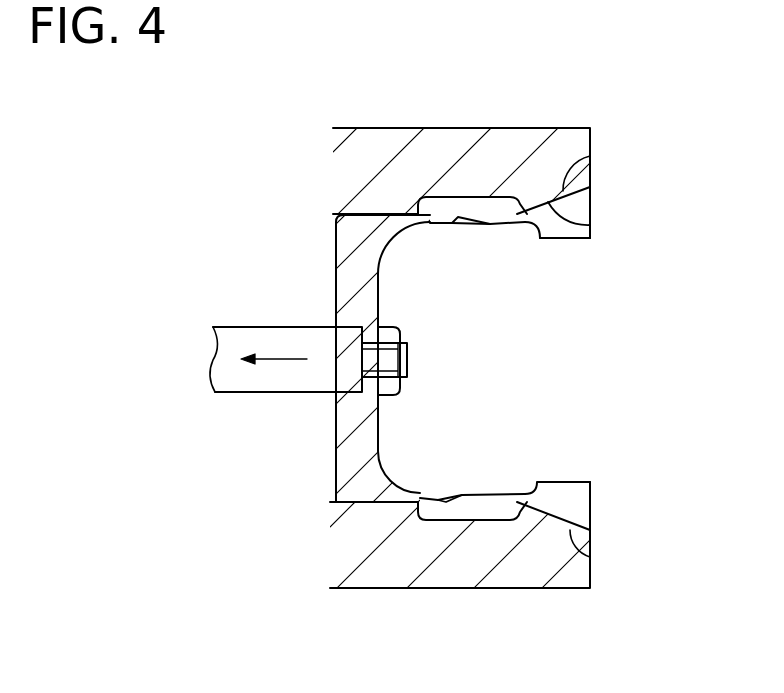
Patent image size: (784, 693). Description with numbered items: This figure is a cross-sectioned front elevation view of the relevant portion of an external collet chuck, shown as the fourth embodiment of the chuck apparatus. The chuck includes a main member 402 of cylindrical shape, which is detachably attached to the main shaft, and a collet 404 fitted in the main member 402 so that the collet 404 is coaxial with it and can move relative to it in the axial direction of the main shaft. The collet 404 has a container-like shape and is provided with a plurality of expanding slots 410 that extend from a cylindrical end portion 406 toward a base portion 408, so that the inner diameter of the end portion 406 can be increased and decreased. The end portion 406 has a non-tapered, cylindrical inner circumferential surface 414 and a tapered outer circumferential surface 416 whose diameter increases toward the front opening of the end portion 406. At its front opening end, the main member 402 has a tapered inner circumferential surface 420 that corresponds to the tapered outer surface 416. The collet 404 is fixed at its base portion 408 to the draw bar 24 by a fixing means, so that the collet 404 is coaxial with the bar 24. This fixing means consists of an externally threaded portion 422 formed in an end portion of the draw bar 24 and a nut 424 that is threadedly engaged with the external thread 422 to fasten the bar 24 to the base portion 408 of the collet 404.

The draw bar 24 is at (245, 377).
The main member 402 is at (515, 575).
The collet 404 is at (369, 511).
The cylindrical end portion 406 is at (584, 226).
The base portion 408 is at (372, 290).
The expanding slots 410 is at (466, 219).
The non-tapered cylindrical inner circumferential surface 414 is at (567, 240).
The tapered outer circumferential surface 416 is at (592, 156).
The tapered inner circumferential surface 420 is at (583, 220).
The externally threaded portion 422 is at (408, 357).
The nut 424 is at (387, 352).